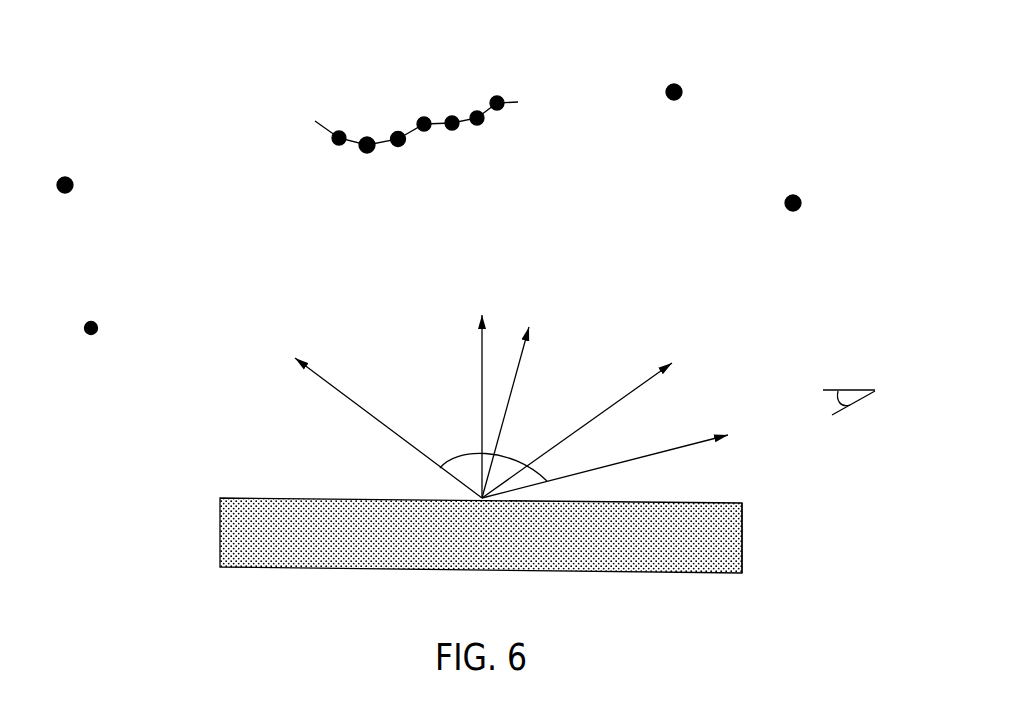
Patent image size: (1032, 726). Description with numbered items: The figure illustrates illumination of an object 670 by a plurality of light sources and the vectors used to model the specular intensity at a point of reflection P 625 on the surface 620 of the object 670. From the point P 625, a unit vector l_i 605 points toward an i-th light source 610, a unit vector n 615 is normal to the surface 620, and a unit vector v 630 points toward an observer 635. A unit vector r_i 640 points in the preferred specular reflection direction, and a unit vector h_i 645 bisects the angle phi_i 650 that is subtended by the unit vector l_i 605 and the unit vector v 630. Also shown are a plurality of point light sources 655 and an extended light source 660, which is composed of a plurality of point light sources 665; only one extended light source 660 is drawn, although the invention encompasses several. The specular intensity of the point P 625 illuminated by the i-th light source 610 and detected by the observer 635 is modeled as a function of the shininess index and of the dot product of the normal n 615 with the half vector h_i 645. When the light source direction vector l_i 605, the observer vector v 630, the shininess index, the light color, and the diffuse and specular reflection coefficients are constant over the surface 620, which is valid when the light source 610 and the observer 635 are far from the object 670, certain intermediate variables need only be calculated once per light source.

The unit vector l_i 605 is at (358, 405).
The i-th light source 610 is at (68, 176).
The unit vector n 615 is at (480, 368).
The surface 620 is at (258, 498).
The point of reflection P 625 is at (484, 501).
The unit vector v 630 is at (687, 444).
The observer 635 is at (850, 391).
The unit vector r_i 640 is at (637, 388).
The unit vector h_i 645 is at (530, 343).
The angle phi_i 650 is at (508, 457).
The point light sources 655 is at (98, 327).
The extended light source 660 is at (498, 96).
The point light sources of the extended light source 665 is at (339, 131).
The object 670 is at (742, 535).